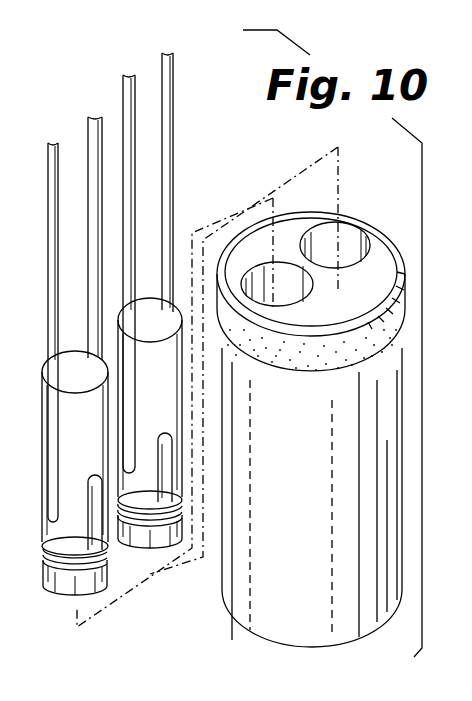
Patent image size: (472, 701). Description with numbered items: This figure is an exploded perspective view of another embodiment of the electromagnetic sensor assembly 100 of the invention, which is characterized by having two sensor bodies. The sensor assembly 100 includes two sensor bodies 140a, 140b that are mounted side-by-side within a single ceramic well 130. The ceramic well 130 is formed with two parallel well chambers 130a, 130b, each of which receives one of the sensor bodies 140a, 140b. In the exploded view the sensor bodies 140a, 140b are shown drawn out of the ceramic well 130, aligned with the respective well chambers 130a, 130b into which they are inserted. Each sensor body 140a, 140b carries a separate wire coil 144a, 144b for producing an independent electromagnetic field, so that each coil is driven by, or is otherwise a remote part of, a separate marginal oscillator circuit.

The electromagnetic sensor assembly 100 is at (376, 188).
The ceramic well 130 is at (268, 607).
The well chamber 130a is at (288, 290).
The well chamber 130b is at (328, 243).
The sensor body 140a is at (45, 530).
The sensor body 140b is at (174, 318).
The wire coil 144a is at (63, 583).
The wire coil 144b is at (130, 540).